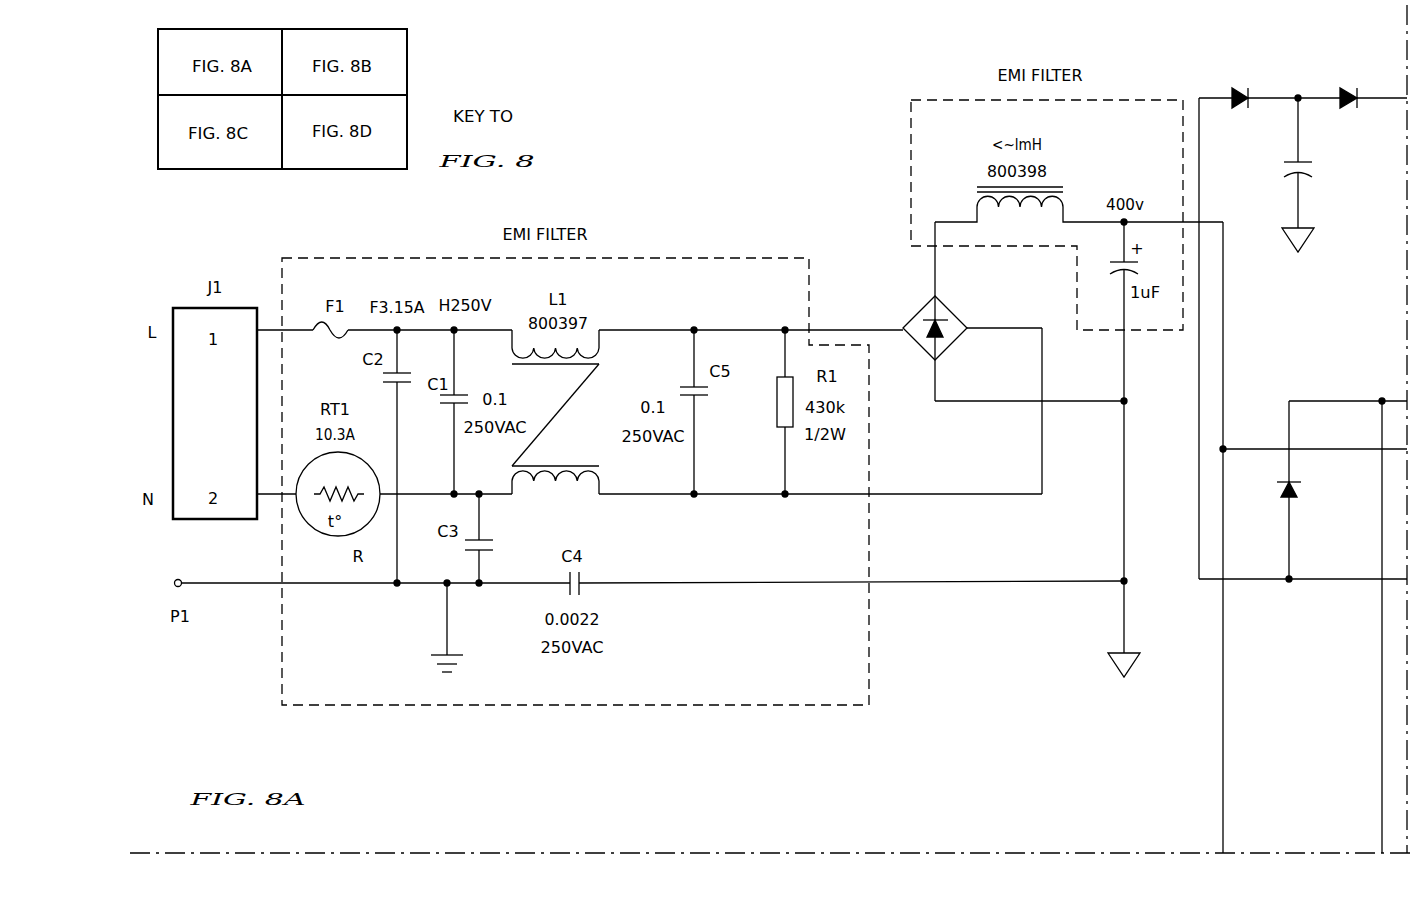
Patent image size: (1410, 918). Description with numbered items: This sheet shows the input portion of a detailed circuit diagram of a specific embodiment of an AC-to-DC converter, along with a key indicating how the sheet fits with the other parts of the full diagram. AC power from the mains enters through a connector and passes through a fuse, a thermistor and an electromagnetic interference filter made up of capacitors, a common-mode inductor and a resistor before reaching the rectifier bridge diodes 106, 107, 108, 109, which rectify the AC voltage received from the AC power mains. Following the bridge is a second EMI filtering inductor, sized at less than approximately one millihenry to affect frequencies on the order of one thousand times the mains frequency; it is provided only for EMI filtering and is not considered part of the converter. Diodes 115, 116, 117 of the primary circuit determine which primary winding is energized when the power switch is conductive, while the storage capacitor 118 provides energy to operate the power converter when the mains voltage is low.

The rectifier bridge diode 106 is at (895, 279).
The rectifier bridge diode 107 is at (895, 279).
The rectifier bridge diode 108 is at (895, 279).
The rectifier bridge diode 109 is at (904, 266).
The diode 115 is at (1297, 494).
The diode 116 is at (1345, 47).
The diode 117 is at (1242, 47).
The storage capacitor 118 is at (1309, 175).